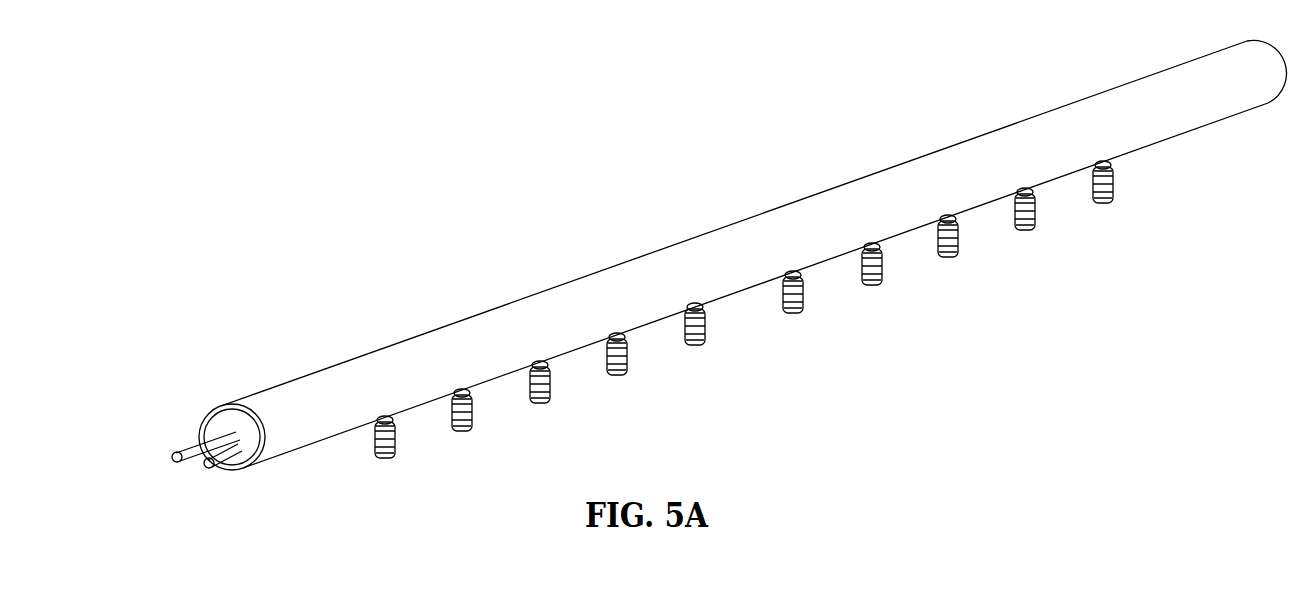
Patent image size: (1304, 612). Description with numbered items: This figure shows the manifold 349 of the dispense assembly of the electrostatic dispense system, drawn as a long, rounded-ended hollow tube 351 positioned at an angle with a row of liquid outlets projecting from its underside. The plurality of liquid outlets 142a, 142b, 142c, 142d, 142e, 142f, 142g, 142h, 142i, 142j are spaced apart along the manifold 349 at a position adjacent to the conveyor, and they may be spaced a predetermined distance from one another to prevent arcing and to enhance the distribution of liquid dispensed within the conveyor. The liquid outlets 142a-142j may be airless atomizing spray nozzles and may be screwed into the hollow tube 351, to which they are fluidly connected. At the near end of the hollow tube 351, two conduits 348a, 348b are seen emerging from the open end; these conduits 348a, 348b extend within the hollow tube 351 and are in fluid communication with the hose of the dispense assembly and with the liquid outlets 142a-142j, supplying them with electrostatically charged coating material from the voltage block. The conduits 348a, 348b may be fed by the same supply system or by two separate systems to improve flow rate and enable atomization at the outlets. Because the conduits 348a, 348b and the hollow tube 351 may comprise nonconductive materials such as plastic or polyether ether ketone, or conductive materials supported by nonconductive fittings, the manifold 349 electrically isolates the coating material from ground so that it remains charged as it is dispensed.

The liquid outlet 142a is at (393, 453).
The liquid outlet 142b is at (470, 426).
The liquid outlet 142c is at (548, 398).
The liquid outlet 142d is at (625, 370).
The liquid outlet 142e is at (703, 340).
The liquid outlet 142f is at (801, 308).
The liquid outlet 142g is at (880, 280).
The liquid outlet 142h is at (956, 252).
The liquid outlet 142i is at (1033, 225).
The liquid outlet 142j is at (1111, 198).
The conduit 348a is at (197, 446).
The conduit 348b is at (226, 472).
The manifold 349 is at (646, 212).
The hollow tube 351 is at (893, 187).